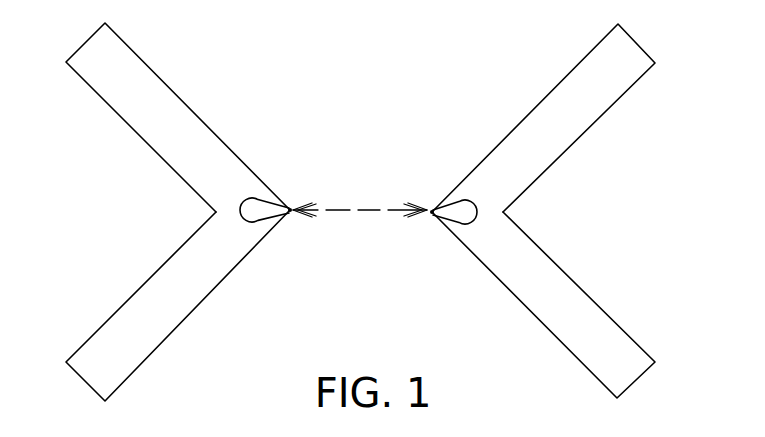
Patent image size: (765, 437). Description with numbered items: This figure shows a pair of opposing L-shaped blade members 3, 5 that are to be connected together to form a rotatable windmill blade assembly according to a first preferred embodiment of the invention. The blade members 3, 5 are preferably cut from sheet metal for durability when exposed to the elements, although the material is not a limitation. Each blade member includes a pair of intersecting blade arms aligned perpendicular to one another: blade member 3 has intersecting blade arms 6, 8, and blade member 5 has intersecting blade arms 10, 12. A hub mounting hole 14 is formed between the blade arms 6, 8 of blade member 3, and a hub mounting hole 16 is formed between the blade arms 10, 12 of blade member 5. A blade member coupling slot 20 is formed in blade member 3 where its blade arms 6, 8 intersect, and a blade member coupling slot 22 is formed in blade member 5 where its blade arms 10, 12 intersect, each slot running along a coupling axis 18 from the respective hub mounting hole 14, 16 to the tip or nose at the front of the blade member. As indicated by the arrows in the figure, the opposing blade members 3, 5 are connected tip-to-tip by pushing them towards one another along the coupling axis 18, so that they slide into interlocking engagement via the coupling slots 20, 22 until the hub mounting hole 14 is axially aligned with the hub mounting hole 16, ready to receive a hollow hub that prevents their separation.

The L-shaped blade member 3 is at (546, 211).
The L-shaped blade member 5 is at (175, 212).
The blade arm 6 is at (570, 90).
The blade arm 8 is at (577, 336).
The blade arm 10 is at (153, 92).
The blade arm 12 is at (152, 330).
The hub mounting hole 14 is at (460, 195).
The hub mounting hole 16 is at (255, 188).
The coupling axis 18 is at (363, 210).
The blade member coupling slot 20 is at (432, 214).
The blade member coupling slot 22 is at (290, 212).